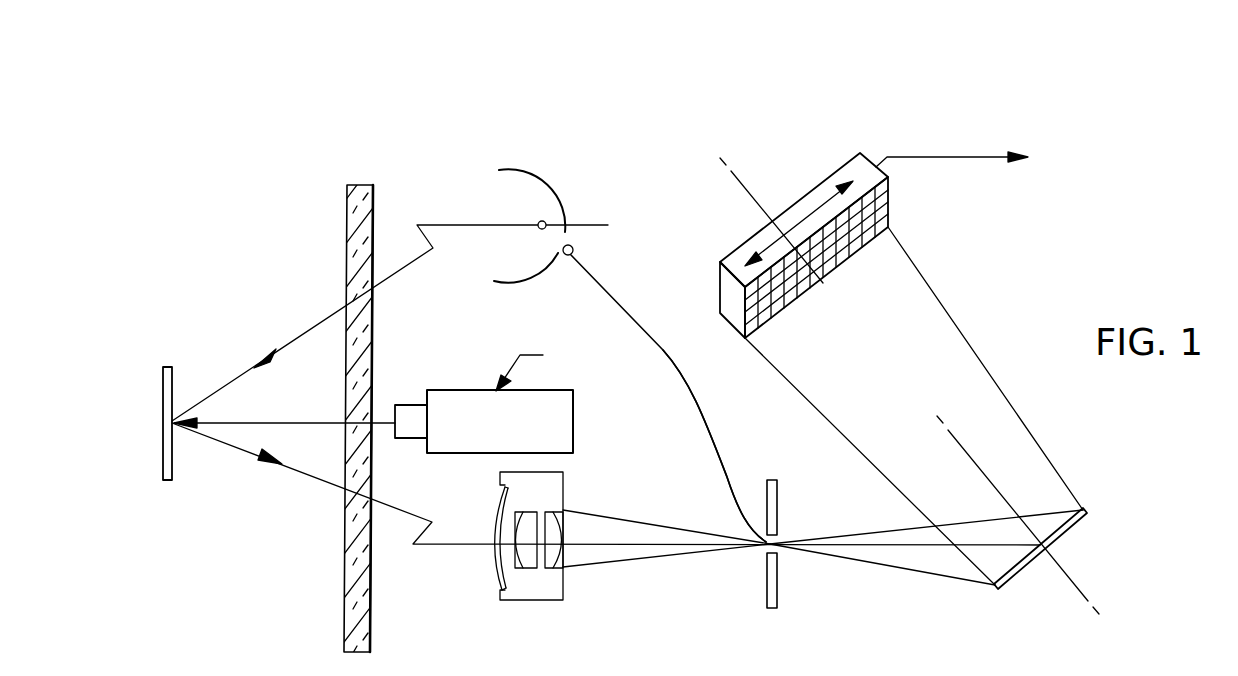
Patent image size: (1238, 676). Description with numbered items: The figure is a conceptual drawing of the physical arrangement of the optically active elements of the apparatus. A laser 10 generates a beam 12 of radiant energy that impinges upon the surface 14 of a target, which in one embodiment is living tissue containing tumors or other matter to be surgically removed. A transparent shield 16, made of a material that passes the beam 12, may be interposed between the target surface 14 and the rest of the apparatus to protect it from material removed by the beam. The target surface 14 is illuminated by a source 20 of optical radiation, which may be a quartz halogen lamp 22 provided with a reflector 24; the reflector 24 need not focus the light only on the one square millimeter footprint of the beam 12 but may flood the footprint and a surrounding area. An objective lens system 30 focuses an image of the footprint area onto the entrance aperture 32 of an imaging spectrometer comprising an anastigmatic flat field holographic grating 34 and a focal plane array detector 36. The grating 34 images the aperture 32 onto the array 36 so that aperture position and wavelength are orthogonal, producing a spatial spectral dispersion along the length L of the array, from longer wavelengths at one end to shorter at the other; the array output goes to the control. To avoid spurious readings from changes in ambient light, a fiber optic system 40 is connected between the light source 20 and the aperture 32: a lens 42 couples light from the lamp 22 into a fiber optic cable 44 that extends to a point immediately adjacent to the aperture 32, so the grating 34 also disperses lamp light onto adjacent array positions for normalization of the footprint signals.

The laser 10 is at (443, 388).
The beam 12 is at (262, 421).
The surface of target 14 is at (172, 468).
The transparent shield 16 is at (347, 263).
The source of optical radiation 20 is at (570, 190).
The quartz halogen lamp 22 is at (539, 229).
The reflector 24 is at (530, 174).
The objective lens system 30 is at (570, 586).
The entrance aperture 32 is at (765, 585).
The anastigmatic flat field holographic grating 34 is at (1088, 526).
The focal plane array detector 36 is at (817, 184).
The fiber optic system 40 is at (612, 294).
The lens 42 is at (575, 248).
The fiber optic cable 44 is at (722, 464).
The length of focal plane array L is at (760, 245).